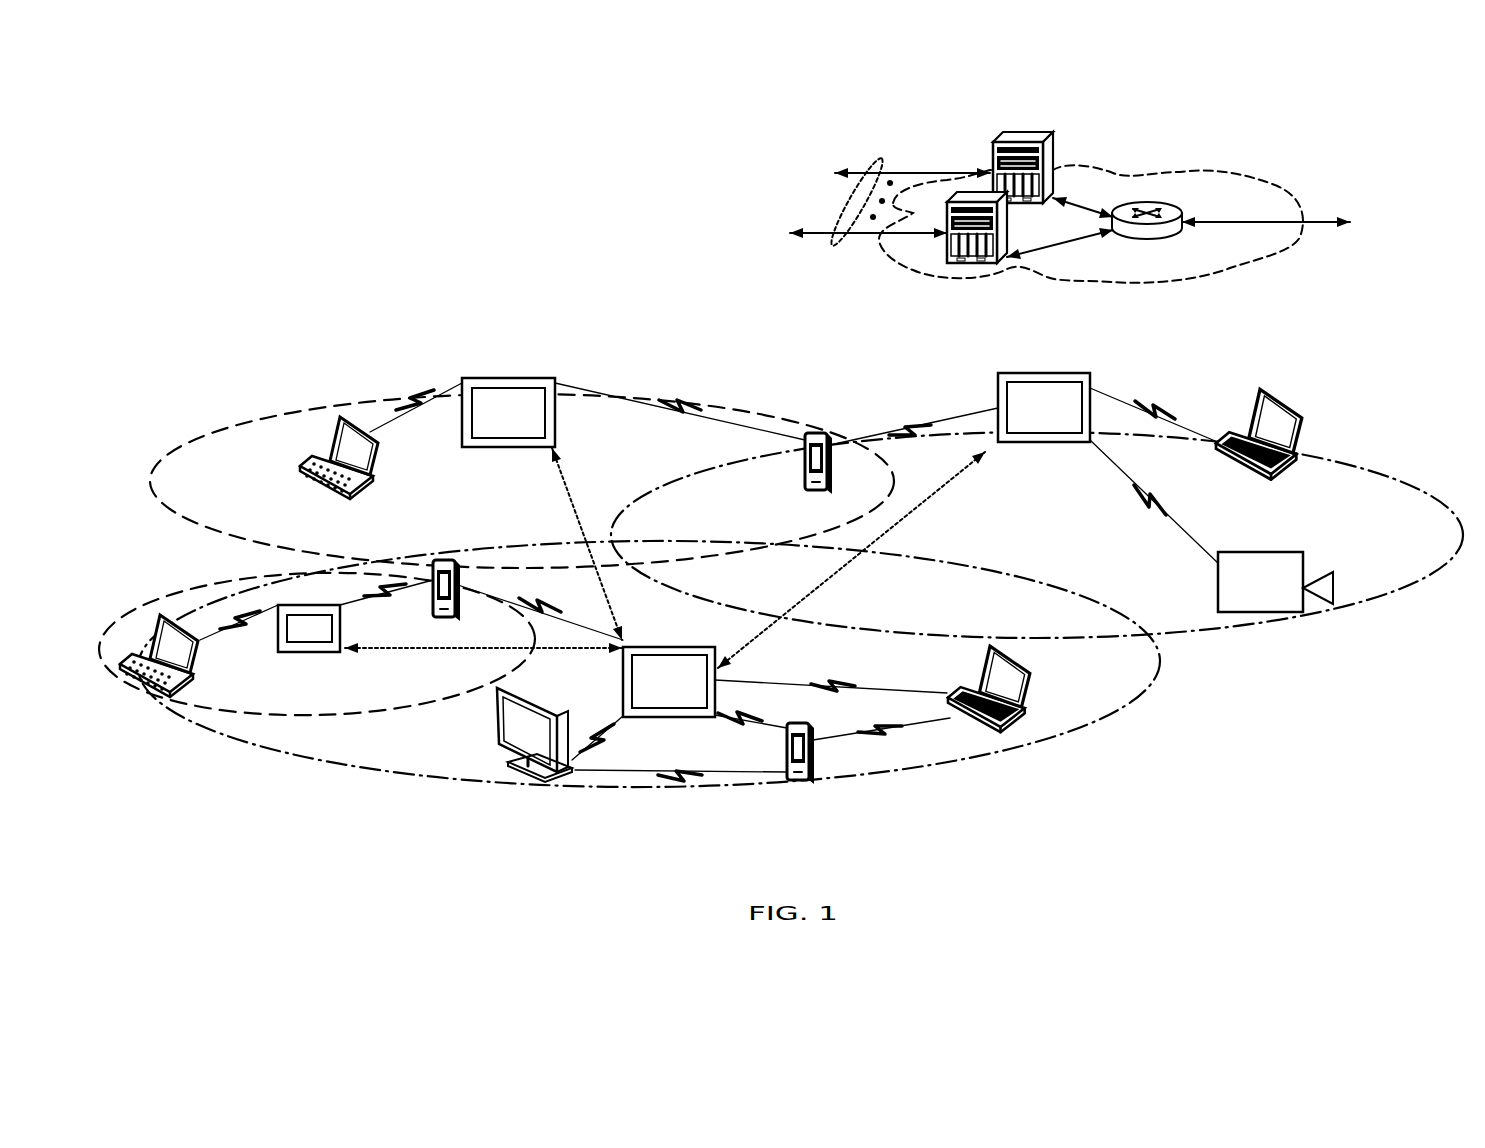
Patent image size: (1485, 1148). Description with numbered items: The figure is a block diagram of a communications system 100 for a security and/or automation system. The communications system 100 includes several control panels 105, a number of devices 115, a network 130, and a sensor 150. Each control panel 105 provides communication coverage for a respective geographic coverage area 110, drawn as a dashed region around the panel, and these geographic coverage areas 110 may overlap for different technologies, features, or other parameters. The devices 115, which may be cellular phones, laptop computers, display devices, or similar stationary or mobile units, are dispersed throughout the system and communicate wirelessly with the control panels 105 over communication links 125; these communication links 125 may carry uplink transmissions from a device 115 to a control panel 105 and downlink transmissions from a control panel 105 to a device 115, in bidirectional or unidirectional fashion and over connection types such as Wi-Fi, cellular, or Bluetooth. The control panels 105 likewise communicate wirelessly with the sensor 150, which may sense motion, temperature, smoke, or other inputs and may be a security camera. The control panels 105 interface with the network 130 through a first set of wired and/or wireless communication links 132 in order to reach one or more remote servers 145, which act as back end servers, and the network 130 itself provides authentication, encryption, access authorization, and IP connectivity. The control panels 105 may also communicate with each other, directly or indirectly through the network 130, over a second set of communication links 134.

The communications system 100 is at (1338, 827).
The control panel 105 is at (535, 376).
The geographic coverage area 110 is at (213, 530).
The device 115 is at (362, 484).
The communication link 125 is at (412, 394).
The network 130 is at (1183, 279).
The first set of communication links 132 is at (848, 248).
The second set of communication links 134 is at (602, 594).
The remote server 145 is at (1022, 132).
The sensor 150 is at (1218, 577).